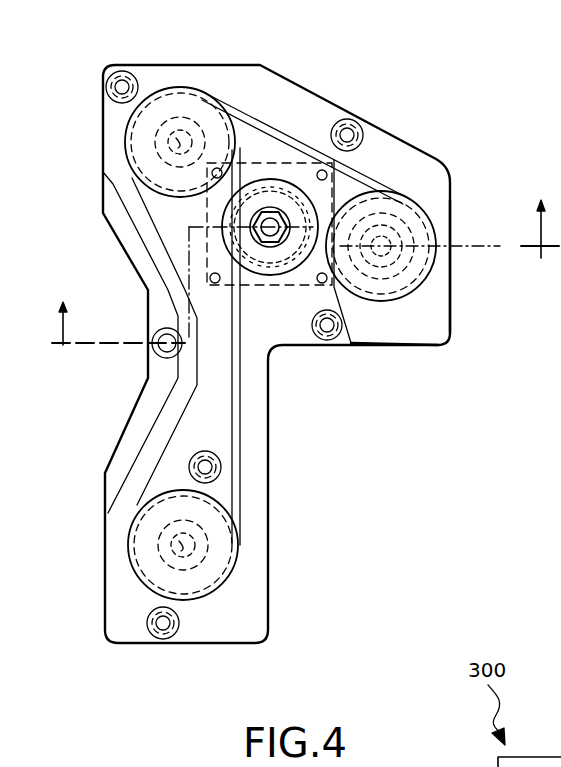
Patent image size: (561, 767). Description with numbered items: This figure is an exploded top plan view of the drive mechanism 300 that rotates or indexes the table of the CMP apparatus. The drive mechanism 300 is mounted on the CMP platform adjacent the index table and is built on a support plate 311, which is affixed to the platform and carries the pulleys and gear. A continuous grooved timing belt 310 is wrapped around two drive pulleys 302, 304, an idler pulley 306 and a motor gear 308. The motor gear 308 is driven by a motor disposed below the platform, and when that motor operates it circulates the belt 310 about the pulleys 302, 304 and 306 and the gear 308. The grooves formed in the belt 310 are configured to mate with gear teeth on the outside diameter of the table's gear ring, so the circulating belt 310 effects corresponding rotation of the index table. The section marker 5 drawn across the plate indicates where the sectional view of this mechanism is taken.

The drive mechanism 300 is at (270, 589).
The drive pulley 302 is at (192, 105).
The drive pulley 304 is at (152, 566).
The idler pulley 306 is at (403, 281).
The motor gear 308 is at (282, 212).
The timing belt 310 is at (236, 390).
The support plate 311 is at (410, 323).
The section line 5- 5 is at (295, 279).